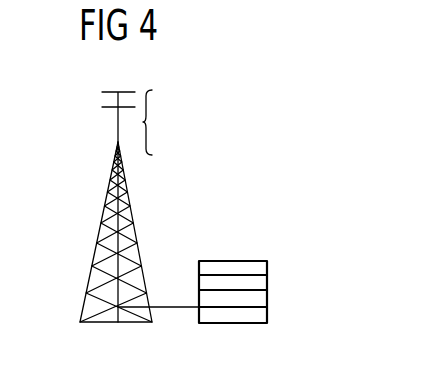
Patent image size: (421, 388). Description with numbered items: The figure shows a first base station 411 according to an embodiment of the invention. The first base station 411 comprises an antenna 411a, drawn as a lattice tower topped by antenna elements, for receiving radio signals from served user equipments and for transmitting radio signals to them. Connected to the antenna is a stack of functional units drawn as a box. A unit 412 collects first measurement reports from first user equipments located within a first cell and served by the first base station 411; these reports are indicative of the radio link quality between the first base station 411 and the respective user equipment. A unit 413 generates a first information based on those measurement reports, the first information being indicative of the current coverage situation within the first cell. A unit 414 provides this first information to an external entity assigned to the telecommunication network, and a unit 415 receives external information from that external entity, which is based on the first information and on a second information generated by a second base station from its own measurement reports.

The first base station 411 is at (182, 195).
The antenna 411a is at (153, 122).
The unit for collecting first measurement reports 412 is at (237, 268).
The unit for generating a first information 413 is at (257, 284).
The unit for providing the first information 414 is at (257, 298).
The unit for receiving external information 415 is at (245, 315).